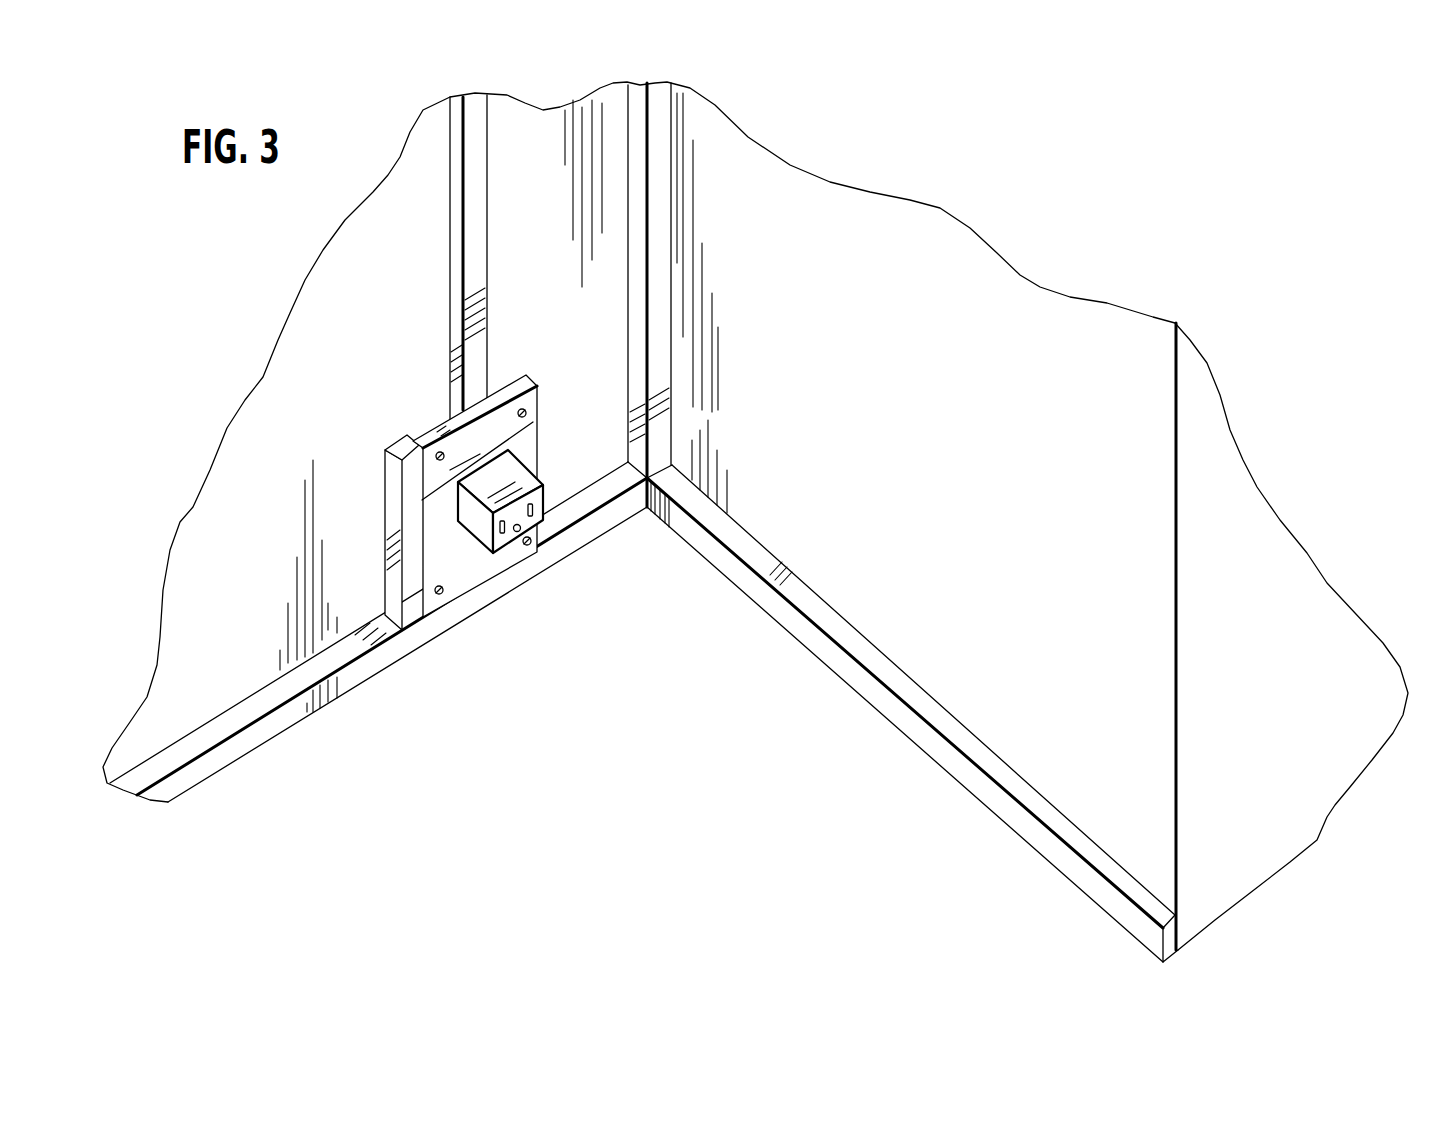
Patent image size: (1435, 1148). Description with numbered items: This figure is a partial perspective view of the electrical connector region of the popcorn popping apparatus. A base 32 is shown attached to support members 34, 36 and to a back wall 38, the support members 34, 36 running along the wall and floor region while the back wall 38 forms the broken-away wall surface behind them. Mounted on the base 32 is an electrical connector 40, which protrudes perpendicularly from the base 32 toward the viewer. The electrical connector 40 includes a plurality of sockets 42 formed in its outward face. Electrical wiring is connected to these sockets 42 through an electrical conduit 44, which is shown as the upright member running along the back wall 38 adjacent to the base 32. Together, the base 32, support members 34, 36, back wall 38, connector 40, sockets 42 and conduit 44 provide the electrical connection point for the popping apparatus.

The base 32 is at (537, 407).
The support member 34 is at (393, 496).
The support member 36 is at (228, 720).
The back wall 38 is at (349, 395).
The electrical connector 40 is at (476, 522).
The sockets 42 is at (503, 534).
The electrical conduit 44 is at (463, 235).